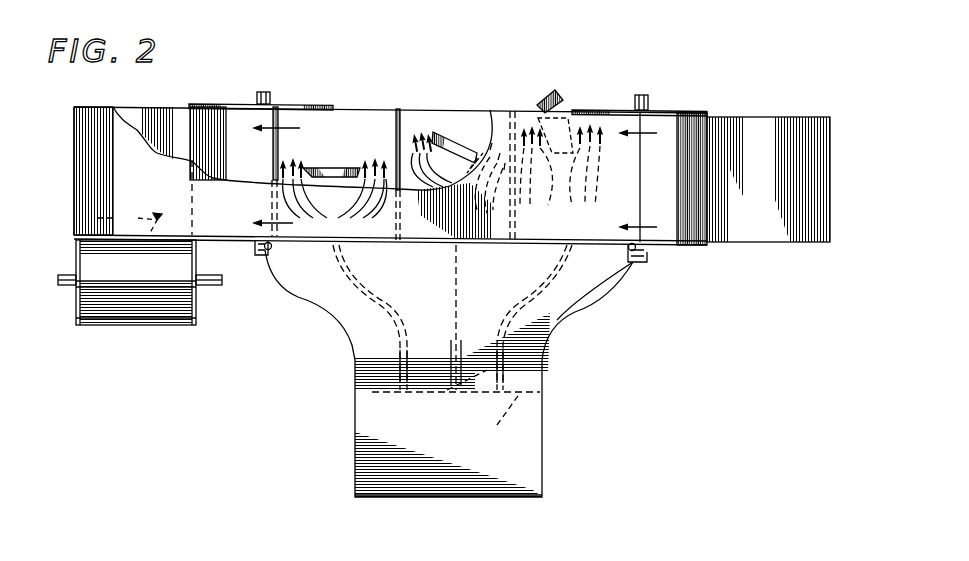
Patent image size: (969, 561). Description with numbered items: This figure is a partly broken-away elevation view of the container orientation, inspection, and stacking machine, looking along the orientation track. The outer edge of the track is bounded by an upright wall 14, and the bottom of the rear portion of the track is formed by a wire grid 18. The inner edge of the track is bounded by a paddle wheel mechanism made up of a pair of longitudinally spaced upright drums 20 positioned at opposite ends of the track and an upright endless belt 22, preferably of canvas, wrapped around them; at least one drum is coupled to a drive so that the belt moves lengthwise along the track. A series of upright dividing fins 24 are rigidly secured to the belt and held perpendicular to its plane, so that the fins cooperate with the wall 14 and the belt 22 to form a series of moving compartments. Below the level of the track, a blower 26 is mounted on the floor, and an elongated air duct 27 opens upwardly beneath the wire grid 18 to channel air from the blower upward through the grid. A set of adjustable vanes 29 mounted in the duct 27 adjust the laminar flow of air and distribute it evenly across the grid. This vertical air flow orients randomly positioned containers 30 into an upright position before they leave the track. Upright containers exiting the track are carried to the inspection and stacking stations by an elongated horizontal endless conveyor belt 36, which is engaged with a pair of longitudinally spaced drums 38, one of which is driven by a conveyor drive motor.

The upright wall 14 is at (88, 163).
The wire grid 18 is at (459, 248).
The upright drums 20 is at (305, 106).
The upright endless belt 22 is at (240, 117).
The dividing fins 24 is at (160, 118).
The blower 26 is at (547, 374).
The air duct 27 is at (590, 293).
The adjustable vanes 29 is at (453, 402).
The containers 30 is at (130, 217).
The endless conveyor belt 36 is at (167, 322).
The drums 38 is at (77, 313).